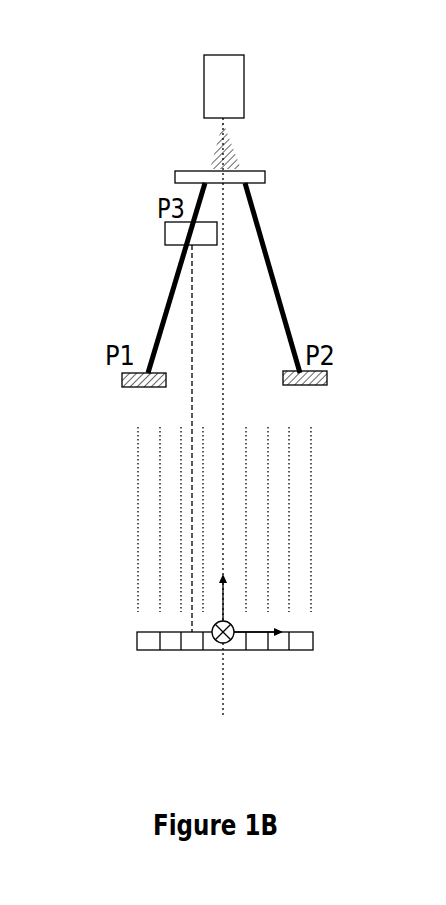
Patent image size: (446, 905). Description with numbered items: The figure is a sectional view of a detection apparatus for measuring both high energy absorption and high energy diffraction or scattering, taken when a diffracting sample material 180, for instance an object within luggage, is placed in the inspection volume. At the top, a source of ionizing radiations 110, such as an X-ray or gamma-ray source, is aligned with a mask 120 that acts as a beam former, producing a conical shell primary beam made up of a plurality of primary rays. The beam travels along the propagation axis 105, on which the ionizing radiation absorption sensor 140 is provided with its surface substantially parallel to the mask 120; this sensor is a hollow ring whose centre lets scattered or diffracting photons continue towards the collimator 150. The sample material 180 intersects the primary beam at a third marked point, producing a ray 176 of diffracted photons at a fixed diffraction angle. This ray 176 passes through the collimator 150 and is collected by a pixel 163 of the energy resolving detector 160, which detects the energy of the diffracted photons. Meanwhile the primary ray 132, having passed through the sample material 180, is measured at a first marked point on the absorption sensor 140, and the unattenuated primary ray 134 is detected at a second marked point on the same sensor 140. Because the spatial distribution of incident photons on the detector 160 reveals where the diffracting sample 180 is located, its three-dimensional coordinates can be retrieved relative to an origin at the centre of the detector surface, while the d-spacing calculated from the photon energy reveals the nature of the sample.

The propagation axis 105 is at (225, 703).
The source of ionizing radiations 110 is at (238, 85).
The mask 120 is at (258, 177).
The primary ray 132 is at (153, 345).
The unattenuated primary ray 134 is at (273, 252).
The ionizing radiation absorption sensor 140 is at (327, 373).
The collimator 150 is at (313, 527).
The energy resolving detector 160 is at (138, 643).
The pixel 163 is at (202, 650).
The ray of diffracted photons 176 is at (191, 305).
The sample material 180 is at (165, 228).